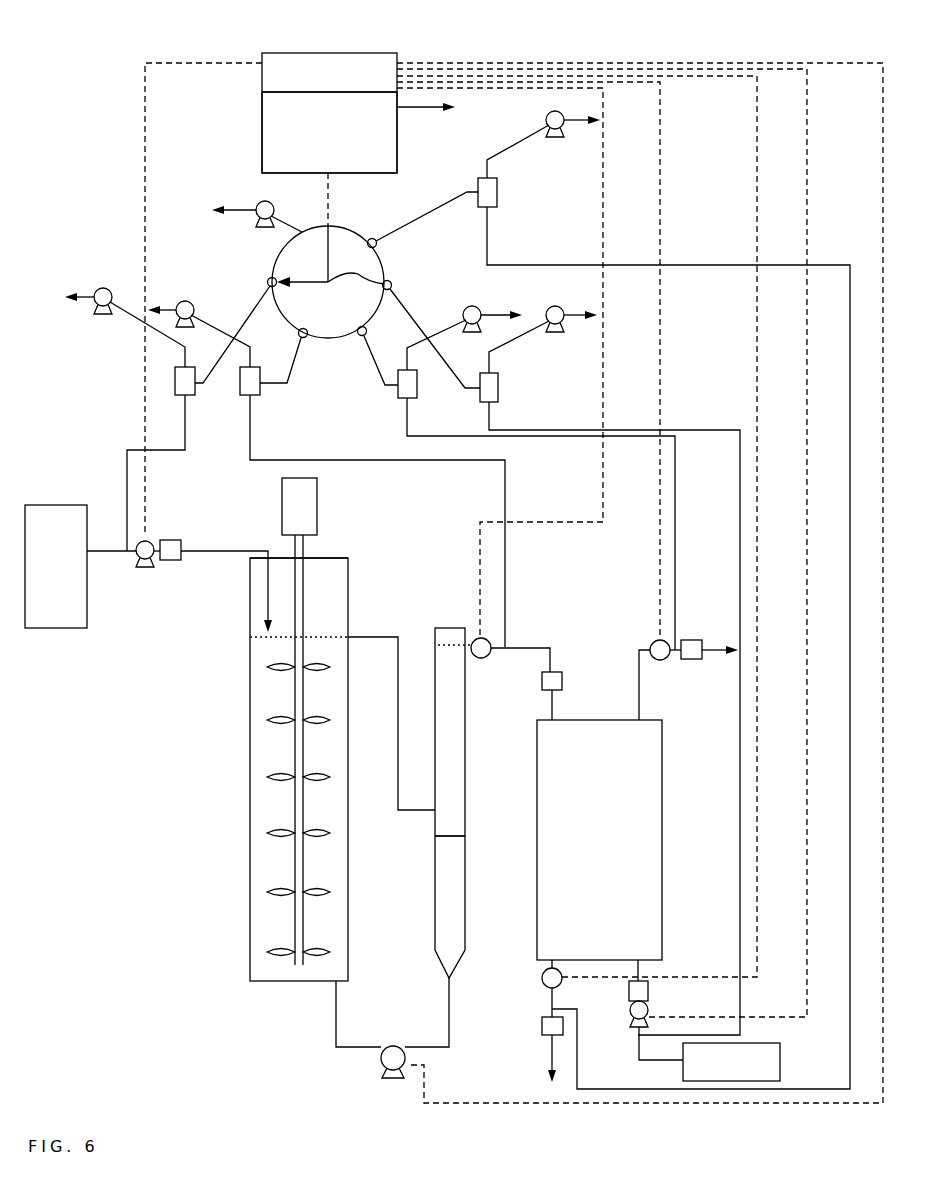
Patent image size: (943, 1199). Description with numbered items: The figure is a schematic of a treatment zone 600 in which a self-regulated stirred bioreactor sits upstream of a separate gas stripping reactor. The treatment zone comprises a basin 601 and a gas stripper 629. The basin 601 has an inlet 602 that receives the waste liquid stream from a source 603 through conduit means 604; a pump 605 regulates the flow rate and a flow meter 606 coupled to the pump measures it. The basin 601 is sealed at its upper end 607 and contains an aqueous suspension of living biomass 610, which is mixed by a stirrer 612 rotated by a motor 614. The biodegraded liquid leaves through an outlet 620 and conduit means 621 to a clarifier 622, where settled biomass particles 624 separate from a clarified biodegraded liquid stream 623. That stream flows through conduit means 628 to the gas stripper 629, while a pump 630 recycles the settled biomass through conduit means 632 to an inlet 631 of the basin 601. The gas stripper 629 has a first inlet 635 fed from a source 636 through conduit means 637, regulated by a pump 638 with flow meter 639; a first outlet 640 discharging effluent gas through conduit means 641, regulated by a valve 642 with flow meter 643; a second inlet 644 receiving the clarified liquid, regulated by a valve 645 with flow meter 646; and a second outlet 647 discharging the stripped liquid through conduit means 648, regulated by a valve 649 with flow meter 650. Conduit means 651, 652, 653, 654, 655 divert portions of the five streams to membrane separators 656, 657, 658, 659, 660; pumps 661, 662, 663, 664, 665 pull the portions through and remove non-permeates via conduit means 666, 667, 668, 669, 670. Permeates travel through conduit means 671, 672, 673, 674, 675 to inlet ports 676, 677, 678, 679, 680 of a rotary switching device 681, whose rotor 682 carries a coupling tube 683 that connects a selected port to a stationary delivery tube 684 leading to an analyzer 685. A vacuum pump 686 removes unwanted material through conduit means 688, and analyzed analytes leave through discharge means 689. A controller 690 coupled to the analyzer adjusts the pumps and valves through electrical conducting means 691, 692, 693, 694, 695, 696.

The treatment zone 600 is at (195, 912).
The basin 601 is at (250, 808).
The inlet 602 is at (262, 556).
The source 603 is at (55, 505).
The conduit means 604 is at (217, 549).
The pump 605 is at (140, 565).
The flow meter 606 is at (170, 560).
The upper end 607 is at (320, 558).
The living biomass 610 is at (337, 852).
The stirrer 612 is at (303, 620).
The motor 614 is at (285, 520).
The outlet 620 is at (350, 640).
The conduit means 621 is at (398, 718).
The clarifier 622 is at (465, 752).
The clarified biodegraded liquid stream 623 is at (465, 806).
The settled biomass particles 624 is at (465, 892).
The conduit means 628 is at (527, 646).
The gas stripper 629 is at (662, 872).
The pump 630 is at (392, 1046).
The inlet 631 is at (333, 990).
The conduit means 632 is at (350, 1050).
The first inlet 635 is at (640, 964).
The source 636 is at (780, 1052).
The conduit means 637 is at (638, 1060).
The pump 638 is at (633, 1018).
The flow meter 639 is at (629, 988).
The first outlet 640 is at (637, 718).
The conduit means 641 is at (646, 647).
The valve 642 is at (664, 660).
The flow meter 643 is at (690, 640).
The second inlet 644 is at (540, 718).
The valve 645 is at (489, 656).
The flow meter 646 is at (562, 680).
The second outlet 647 is at (540, 962).
The conduit means 648 is at (546, 1045).
The valve 649 is at (542, 982).
The flow meter 650 is at (542, 1025).
The conduit means 651 is at (186, 445).
The conduit means 652 is at (445, 460).
The conduit means 653 is at (722, 430).
The conduit means 654 is at (580, 437).
The conduit means 655 is at (735, 268).
The membrane separator 656 is at (195, 395).
The membrane separator 657 is at (260, 395).
The membrane separator 658 is at (498, 386).
The membrane separator 659 is at (398, 398).
The membrane separator 660 is at (497, 192).
The pump 661 is at (108, 288).
The pump 662 is at (183, 301).
The pump 663 is at (554, 306).
The pump 664 is at (471, 306).
The pump 665 is at (548, 115).
The conduit means 666 is at (135, 318).
The conduit means 667 is at (226, 326).
The conduit means 668 is at (520, 338).
The conduit means 669 is at (417, 378).
The conduit means 670 is at (487, 155).
The conduit means 671 is at (255, 302).
The conduit means 672 is at (278, 383).
The conduit means 673 is at (460, 388).
The conduit means 674 is at (380, 373).
The conduit means 675 is at (432, 207).
The inlet port 676 is at (270, 278).
The inlet port 677 is at (305, 338).
The inlet port 678 is at (392, 286).
The inlet port 679 is at (366, 333).
The inlet port 680 is at (372, 238).
The rotary switching device 681 is at (400, 252).
The rotor 682 is at (390, 280).
The coupling tube 683 is at (305, 283).
The stationary delivery tube 684 is at (333, 233).
The analyzer 685 is at (262, 146).
The vacuum pump 686 is at (262, 206).
The conduit means 688 is at (294, 218).
The discharge means 689 is at (405, 107).
The controller 690 is at (297, 53).
The electrical conducting means 691 is at (145, 148).
The electrical conducting means 692 is at (807, 205).
The electrical conducting means 693 is at (660, 205).
The electrical conducting means 694 is at (603, 205).
The electrical conducting means 695 is at (757, 205).
The electrical conducting means 696 is at (883, 205).